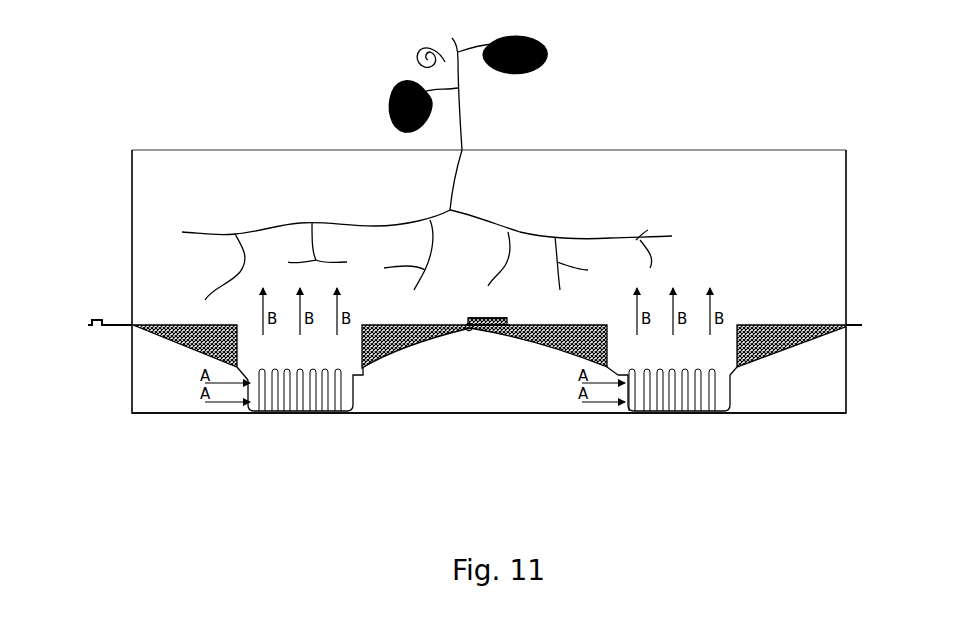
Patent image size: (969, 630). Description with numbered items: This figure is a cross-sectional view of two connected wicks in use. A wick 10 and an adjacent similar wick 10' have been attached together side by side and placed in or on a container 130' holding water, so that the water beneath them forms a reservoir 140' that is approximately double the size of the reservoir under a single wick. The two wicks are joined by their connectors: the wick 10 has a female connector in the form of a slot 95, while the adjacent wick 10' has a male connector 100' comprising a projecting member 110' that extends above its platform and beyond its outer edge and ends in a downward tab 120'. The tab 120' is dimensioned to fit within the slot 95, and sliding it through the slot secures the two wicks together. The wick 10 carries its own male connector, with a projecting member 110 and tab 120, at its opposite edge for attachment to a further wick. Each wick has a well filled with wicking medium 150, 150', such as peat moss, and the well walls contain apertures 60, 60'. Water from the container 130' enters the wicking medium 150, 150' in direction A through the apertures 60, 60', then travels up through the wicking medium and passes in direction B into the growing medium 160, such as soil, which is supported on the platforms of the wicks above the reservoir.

The wick 10 is at (166, 366).
The adjacent wick 10' is at (813, 366).
The apertures 60 is at (296, 426).
The apertures of adjacent wick 60' is at (672, 433).
The slot 95 is at (472, 330).
The male connector of adjacent wick 100' is at (481, 287).
The projecting member 110 is at (101, 303).
The projecting member of adjacent wick 110' is at (504, 302).
The tab 120 is at (81, 325).
The tab of adjacent wick 120' is at (467, 305).
The container 130' is at (489, 461).
The reservoir 140' is at (490, 411).
The wicking medium 150 is at (300, 378).
The wicking medium of adjacent wick 150' is at (679, 375).
The growing medium 160 is at (780, 241).